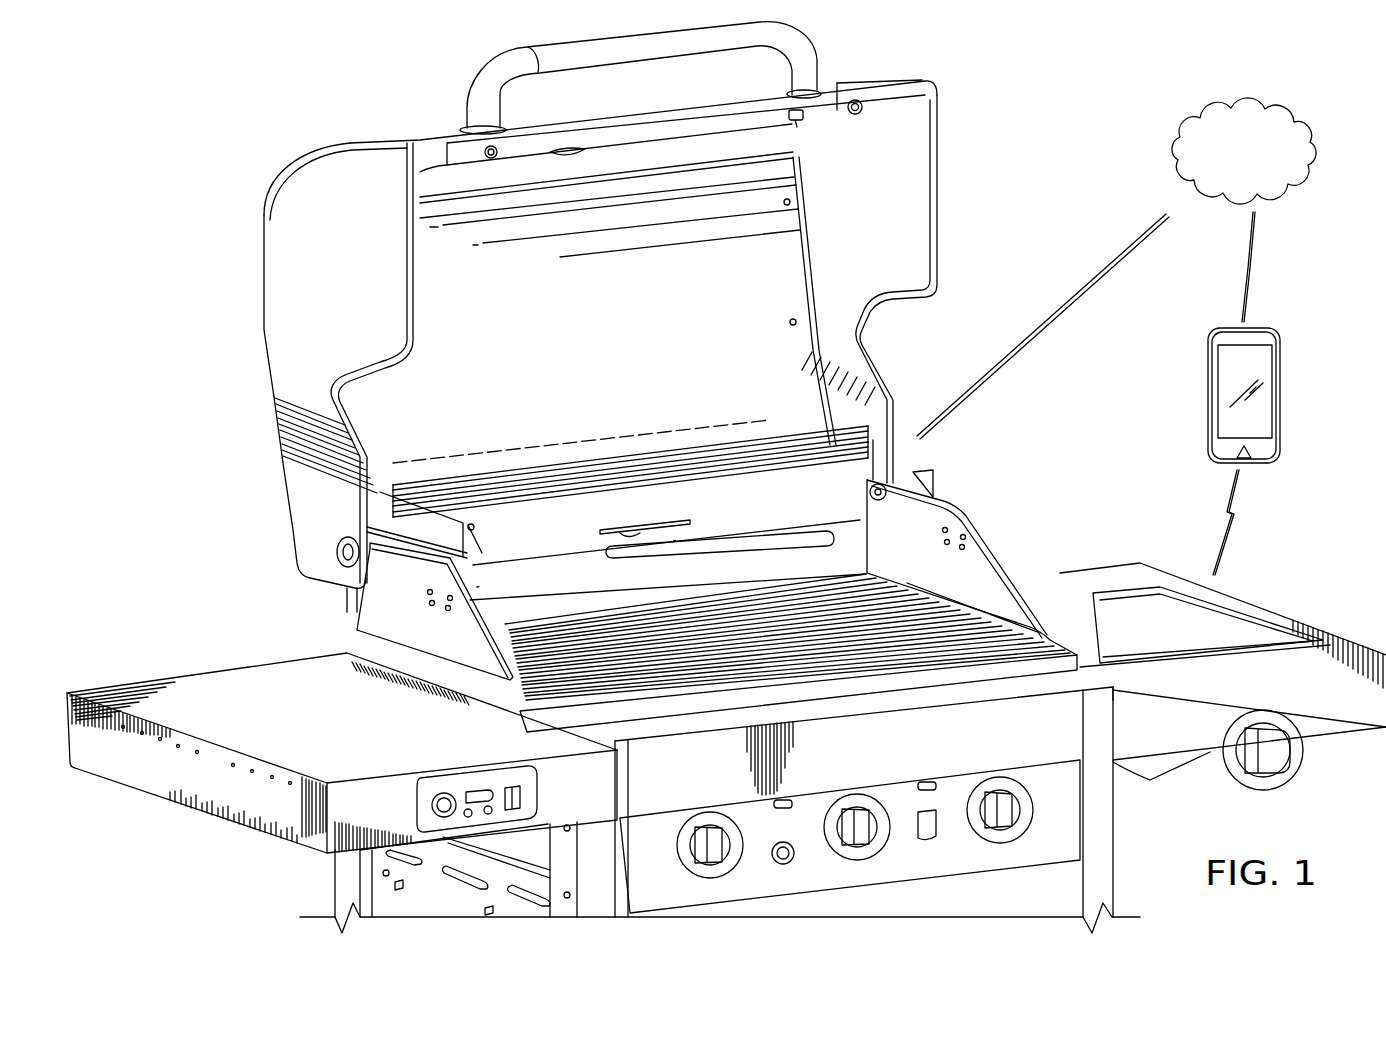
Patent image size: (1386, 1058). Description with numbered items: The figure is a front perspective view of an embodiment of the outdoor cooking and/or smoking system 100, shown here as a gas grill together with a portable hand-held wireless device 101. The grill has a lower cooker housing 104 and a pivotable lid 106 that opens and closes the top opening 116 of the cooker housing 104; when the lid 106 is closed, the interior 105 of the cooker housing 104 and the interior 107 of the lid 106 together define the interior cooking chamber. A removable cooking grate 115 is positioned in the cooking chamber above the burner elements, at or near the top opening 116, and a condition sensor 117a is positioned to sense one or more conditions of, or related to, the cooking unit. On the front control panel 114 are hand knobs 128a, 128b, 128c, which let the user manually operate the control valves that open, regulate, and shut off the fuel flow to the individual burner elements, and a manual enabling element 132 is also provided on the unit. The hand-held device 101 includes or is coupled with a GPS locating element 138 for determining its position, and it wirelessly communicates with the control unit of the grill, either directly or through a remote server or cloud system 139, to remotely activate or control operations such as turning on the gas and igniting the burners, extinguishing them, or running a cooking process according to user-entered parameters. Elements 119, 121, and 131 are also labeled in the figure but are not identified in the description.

The outdoor cooking and/or smoking system 100 is at (284, 118).
The portable hand-held wireless device 101 is at (1282, 393).
The lower cooker housing 104 is at (1053, 645).
The interior of the cooker housing 105 is at (962, 576).
The pivotable lid 106 is at (938, 186).
The interior of the lid 107 is at (768, 278).
The front control panel 114 is at (1062, 790).
The removable cooking grate 115 is at (878, 600).
The top opening of the cooker housing 116 is at (1060, 640).
The condition sensor 117a is at (794, 116).
The lid side panel 119 is at (430, 290).
The back wall 121 is at (598, 603).
The hand knob 128a is at (1000, 780).
The hand knob 128b is at (858, 797).
The hand knob 128c is at (712, 822).
The warming rack 131 is at (742, 512).
The manual enabling element 132 is at (806, 855).
The GPS locating element 138 is at (1250, 452).
The cloud system 139 is at (1265, 168).